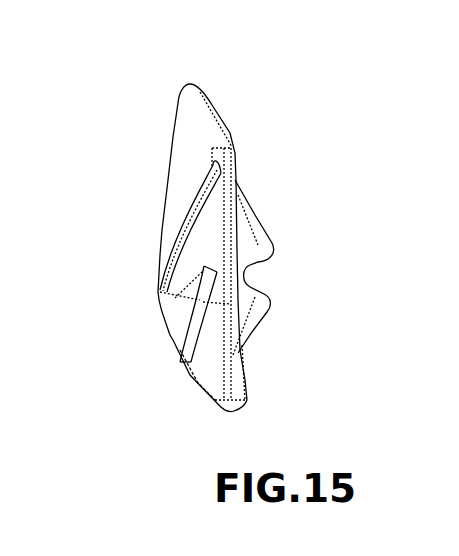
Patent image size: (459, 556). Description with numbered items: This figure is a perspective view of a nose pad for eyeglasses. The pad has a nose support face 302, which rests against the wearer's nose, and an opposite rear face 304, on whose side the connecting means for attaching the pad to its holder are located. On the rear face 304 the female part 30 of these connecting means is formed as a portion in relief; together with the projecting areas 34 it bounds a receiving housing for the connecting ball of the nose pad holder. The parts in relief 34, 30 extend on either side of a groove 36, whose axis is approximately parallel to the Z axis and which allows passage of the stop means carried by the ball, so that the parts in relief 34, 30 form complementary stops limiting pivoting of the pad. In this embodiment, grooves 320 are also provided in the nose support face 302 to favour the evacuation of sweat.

The female part 30 is at (260, 305).
The nose support face 302 is at (187, 150).
The rear face 304 is at (230, 130).
The projecting areas 34 is at (258, 207).
The groove 36 is at (265, 268).
The grooves 320 is at (203, 302).